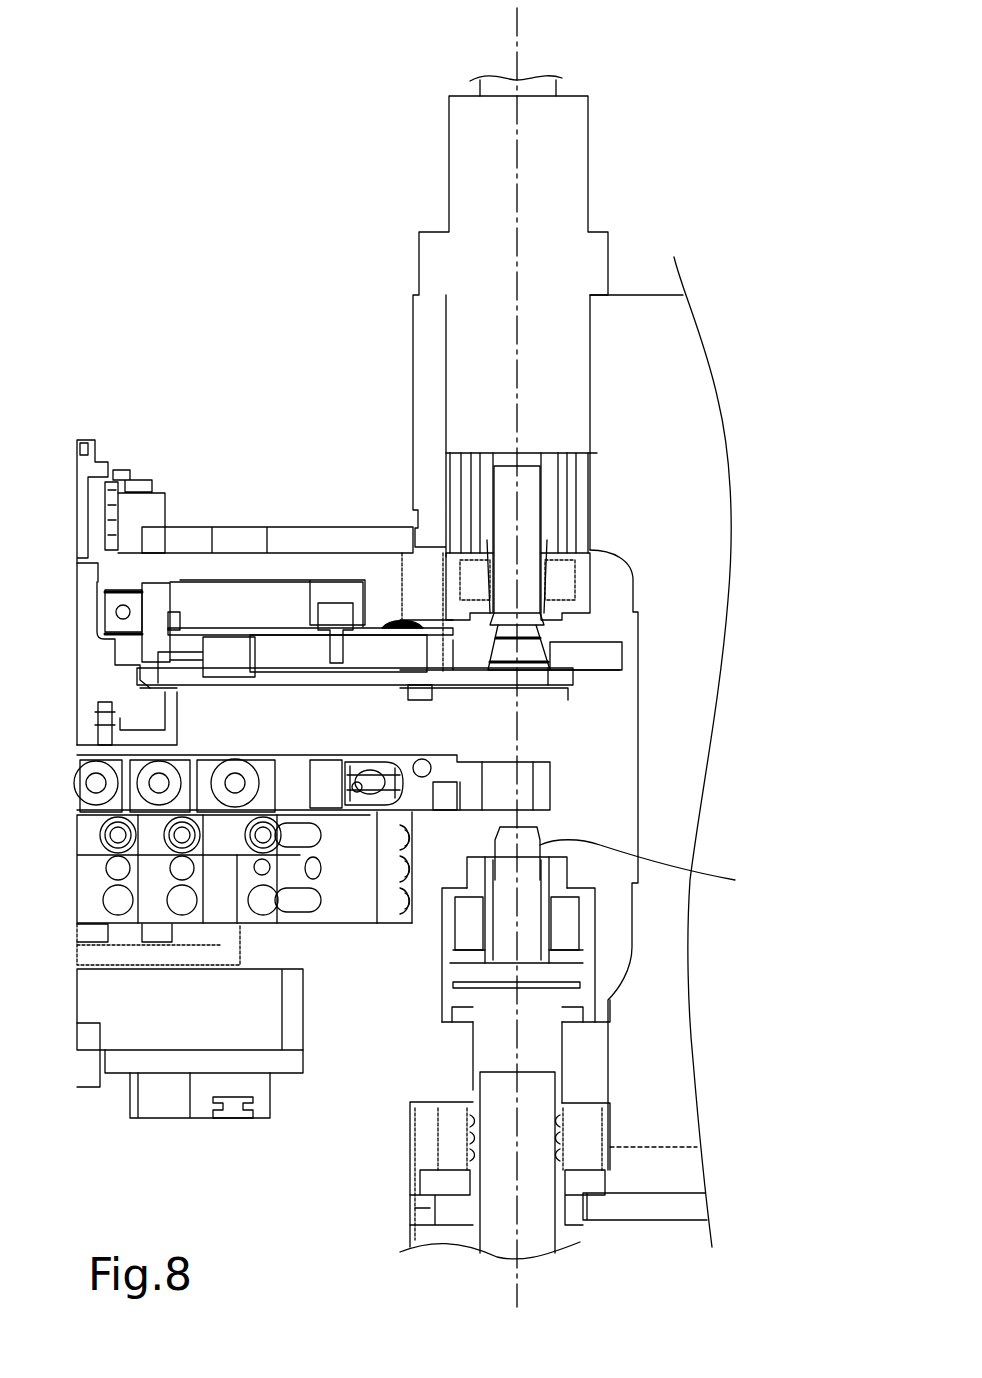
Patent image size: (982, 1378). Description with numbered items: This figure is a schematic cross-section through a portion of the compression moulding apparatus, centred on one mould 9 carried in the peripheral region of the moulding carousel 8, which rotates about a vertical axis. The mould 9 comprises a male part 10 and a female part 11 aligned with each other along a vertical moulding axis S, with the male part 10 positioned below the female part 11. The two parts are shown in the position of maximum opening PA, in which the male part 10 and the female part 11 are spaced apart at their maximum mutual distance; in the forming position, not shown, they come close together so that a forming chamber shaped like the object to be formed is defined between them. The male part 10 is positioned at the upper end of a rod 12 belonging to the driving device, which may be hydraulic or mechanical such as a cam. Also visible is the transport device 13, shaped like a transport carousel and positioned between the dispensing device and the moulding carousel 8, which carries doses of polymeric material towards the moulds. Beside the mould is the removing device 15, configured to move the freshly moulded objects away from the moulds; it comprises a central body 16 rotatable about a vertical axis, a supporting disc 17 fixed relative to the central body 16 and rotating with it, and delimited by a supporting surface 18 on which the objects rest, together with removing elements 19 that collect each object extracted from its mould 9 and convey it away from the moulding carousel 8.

The moulding carousel 8 is at (667, 400).
The mould 9 is at (385, 347).
The male part 10 is at (560, 842).
The female part 11 is at (583, 616).
The rod 12 is at (533, 1238).
The transport device 13 is at (567, 787).
The removing device 15 is at (590, 693).
The central body 16 is at (153, 570).
The supporting disc 17 is at (290, 680).
The supporting surface 18 is at (457, 663).
The removing element 19 is at (278, 653).
The position of maximum opening PA is at (755, 460).
The moulding axis S is at (518, 1040).